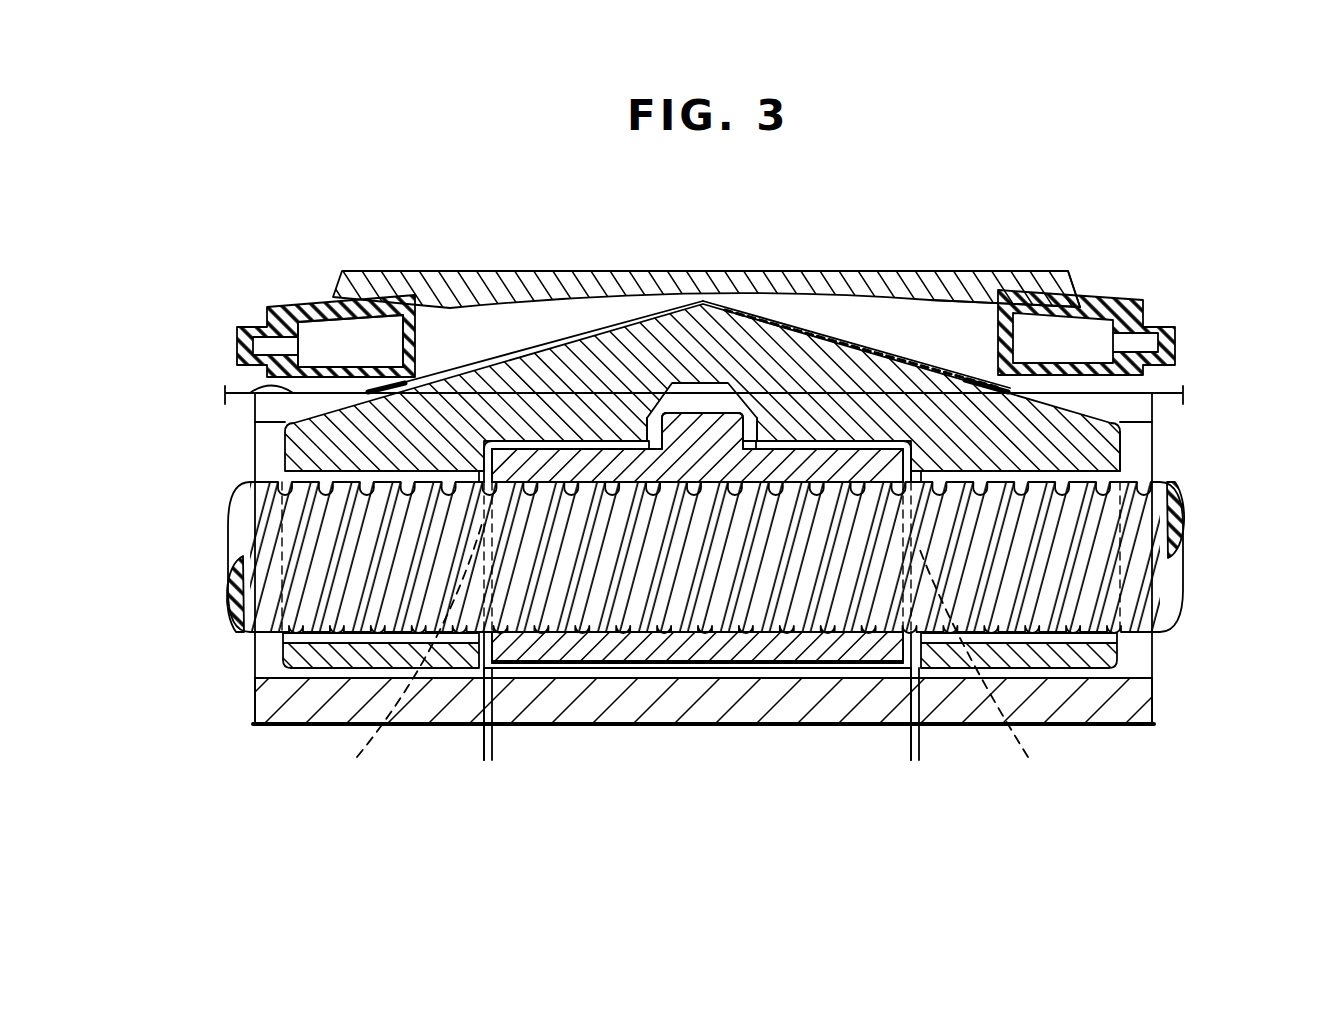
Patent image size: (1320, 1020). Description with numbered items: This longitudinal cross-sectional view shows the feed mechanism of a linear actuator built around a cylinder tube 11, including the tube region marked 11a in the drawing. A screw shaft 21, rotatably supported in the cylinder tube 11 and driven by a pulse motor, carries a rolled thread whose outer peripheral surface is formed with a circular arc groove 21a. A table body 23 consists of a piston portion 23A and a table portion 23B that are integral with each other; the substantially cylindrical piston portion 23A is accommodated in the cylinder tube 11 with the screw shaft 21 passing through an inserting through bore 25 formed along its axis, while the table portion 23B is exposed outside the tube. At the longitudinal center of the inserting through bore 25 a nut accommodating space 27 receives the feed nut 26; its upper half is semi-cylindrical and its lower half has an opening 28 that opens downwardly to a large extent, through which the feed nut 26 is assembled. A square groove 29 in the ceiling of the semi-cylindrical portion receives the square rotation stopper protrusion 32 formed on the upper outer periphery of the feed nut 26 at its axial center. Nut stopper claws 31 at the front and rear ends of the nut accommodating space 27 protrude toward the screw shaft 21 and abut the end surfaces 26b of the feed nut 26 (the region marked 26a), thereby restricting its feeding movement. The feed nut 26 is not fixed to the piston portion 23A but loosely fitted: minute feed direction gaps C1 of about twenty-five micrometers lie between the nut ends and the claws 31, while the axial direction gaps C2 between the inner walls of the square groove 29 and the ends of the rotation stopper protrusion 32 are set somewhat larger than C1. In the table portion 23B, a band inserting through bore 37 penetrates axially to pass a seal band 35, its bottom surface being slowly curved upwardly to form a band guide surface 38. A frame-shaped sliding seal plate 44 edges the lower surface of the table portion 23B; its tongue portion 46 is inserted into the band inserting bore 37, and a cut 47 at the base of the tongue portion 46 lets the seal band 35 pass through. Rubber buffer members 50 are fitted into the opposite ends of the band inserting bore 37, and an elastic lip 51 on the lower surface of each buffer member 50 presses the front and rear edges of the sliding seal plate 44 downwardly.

The cylinder tube 11 is at (1162, 702).
The housing top surface 11a is at (260, 389).
The screw shaft 21 is at (560, 577).
The circular arc groove 21a is at (847, 580).
The table body 23 is at (1136, 289).
The piston portion 23A is at (1112, 455).
The table portion 23B is at (1073, 262).
The inserting through bore 25 is at (262, 498).
The feed nut 26 is at (752, 657).
The nut central portion 26a is at (856, 498).
The end surfaces 26b is at (470, 468).
The nut accommodating space 27 is at (877, 670).
The opening 28 is at (641, 672).
The square groove 29 is at (710, 403).
The nut stopper claws 31 is at (685, 654).
The rotation stopper protrusion 32 is at (740, 454).
The seal band 35 is at (850, 337).
The band inserting through bore 37 is at (516, 314).
The band guide surface 38 is at (620, 330).
The sliding seal plate 44 is at (428, 384).
The tongue portion 46 is at (787, 323).
The cut 47 is at (968, 380).
The buffer members 50 is at (278, 313).
The elastic lip 51 is at (362, 368).
The feed direction gaps C1 is at (508, 743).
The axial direction gaps C2 is at (680, 428).